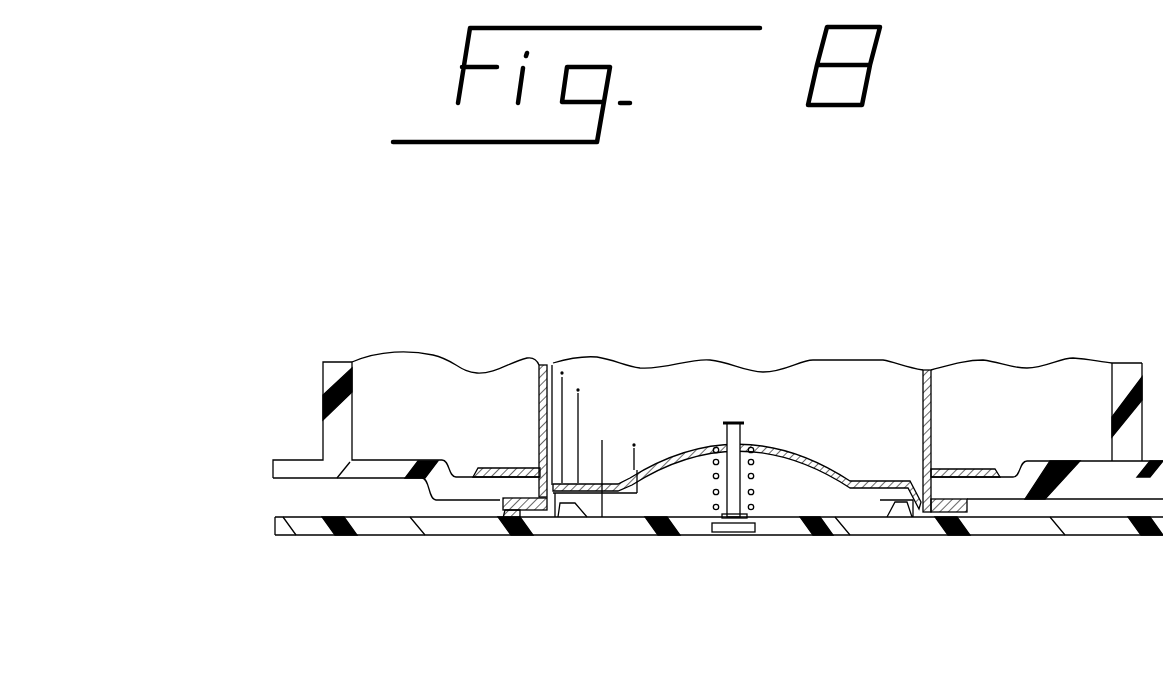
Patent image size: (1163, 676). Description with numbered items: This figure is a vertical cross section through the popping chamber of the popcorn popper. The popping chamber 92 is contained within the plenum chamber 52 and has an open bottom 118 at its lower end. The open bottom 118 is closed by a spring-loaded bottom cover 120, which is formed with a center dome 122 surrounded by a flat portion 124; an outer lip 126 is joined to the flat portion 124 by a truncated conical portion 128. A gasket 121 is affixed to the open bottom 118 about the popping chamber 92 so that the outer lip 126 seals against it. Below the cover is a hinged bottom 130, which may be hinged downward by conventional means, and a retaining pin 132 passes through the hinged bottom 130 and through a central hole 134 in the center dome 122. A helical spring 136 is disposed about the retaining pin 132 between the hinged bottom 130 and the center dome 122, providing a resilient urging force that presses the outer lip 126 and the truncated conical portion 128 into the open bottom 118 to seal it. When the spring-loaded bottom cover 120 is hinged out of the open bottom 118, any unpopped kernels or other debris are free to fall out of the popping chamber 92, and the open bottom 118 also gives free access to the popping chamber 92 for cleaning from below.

The plenum chamber 52 is at (335, 382).
The popping chamber 92 is at (668, 373).
The open bottom 118 is at (545, 500).
The spring-loaded bottom cover 120 is at (838, 463).
The gasket 121 is at (955, 518).
The center dome 122 is at (797, 445).
The flat portion 124 is at (590, 475).
The outer lip 126 is at (518, 512).
The truncated conical portion 128 is at (663, 493).
The hinged bottom 130 is at (848, 518).
The retaining pin 132 is at (735, 482).
The central hole 134 is at (740, 445).
The helical spring 136 is at (716, 493).